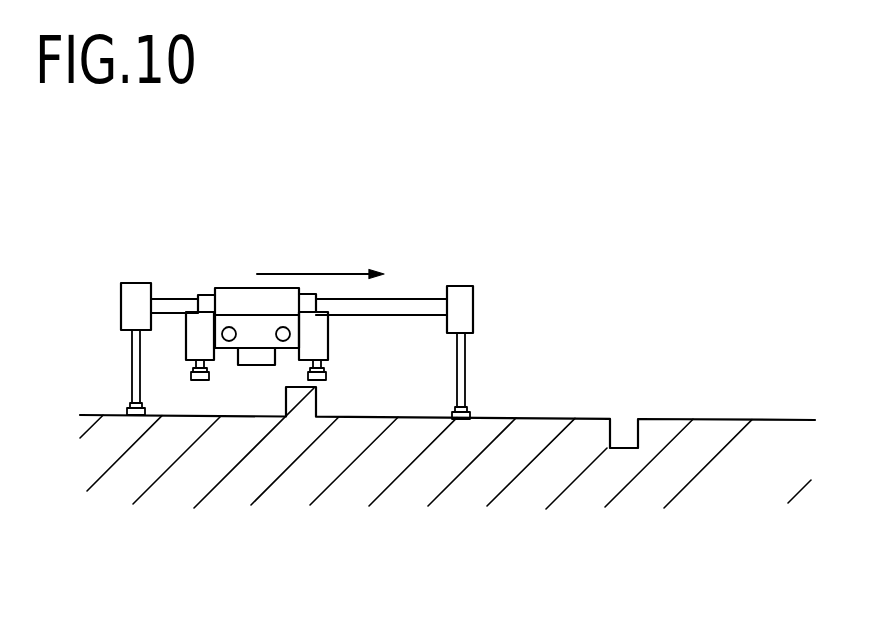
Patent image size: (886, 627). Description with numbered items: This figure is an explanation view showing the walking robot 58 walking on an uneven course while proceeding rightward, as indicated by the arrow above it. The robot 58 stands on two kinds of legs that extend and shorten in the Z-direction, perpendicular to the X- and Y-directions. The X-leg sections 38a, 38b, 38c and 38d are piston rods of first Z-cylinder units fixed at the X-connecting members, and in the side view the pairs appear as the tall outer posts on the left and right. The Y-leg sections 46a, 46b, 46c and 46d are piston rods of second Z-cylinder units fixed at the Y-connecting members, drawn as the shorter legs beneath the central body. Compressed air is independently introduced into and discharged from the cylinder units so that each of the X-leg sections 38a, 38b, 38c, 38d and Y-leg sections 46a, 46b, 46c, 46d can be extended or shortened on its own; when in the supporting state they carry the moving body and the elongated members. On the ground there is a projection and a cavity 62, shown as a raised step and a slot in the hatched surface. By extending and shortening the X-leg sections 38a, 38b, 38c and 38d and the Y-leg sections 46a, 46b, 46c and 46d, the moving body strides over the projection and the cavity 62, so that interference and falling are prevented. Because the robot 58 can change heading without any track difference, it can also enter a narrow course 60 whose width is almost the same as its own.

The X-leg section 38a is at (532, 314).
The X-leg section 38b is at (468, 363).
The X-leg section 38c is at (103, 311).
The X-leg section 38d is at (131, 357).
The Y-leg section 46a is at (359, 450).
The Y-leg section 46b is at (174, 450).
The Y-leg section 46c is at (318, 364).
The Y-leg section 46d is at (199, 366).
The walking robot 58 is at (230, 280).
The narrow course 60 is at (286, 395).
The cavity 62 is at (624, 425).